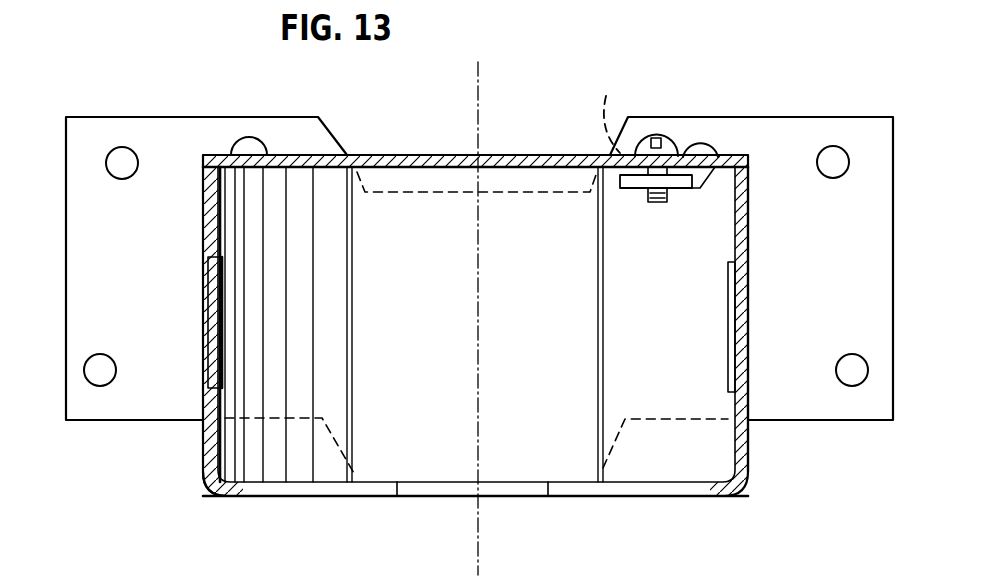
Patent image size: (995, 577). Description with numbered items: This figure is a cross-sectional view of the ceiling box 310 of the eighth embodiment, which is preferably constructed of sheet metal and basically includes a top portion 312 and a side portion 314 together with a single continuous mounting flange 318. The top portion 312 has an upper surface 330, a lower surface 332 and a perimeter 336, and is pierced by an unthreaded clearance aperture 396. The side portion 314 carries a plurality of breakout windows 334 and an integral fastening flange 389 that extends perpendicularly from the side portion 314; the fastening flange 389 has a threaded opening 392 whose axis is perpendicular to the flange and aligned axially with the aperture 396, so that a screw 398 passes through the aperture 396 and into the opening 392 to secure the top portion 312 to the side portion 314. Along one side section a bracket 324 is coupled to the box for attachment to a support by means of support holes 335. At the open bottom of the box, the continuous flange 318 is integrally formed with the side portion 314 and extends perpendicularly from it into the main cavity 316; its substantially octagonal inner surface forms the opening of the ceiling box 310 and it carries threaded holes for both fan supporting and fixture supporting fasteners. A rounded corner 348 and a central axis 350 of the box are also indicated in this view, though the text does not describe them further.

The ceiling box 310 is at (126, 108).
The top portion 312 is at (531, 151).
The side portion 314 is at (788, 213).
The main cavity 316 is at (523, 432).
The flange 318 is at (227, 498).
The bracket 324 is at (836, 117).
The upper surface 330 is at (441, 155).
The lower surface 332 is at (322, 168).
The breakout windows 334 is at (225, 332).
The support holes 335 is at (102, 372).
The perimeter 336 is at (210, 162).
The rounded corner 348 is at (202, 468).
The central axis 350 is at (480, 102).
The fastening flange 389 is at (622, 186).
The threaded opening 392 is at (683, 190).
The aperture 396 is at (633, 111).
The screw 398 is at (672, 153).